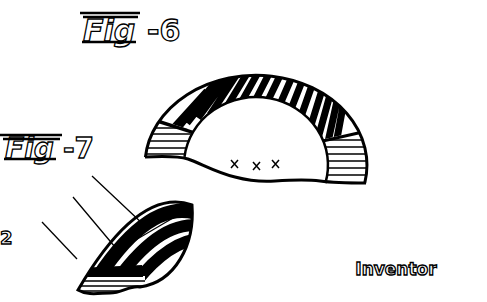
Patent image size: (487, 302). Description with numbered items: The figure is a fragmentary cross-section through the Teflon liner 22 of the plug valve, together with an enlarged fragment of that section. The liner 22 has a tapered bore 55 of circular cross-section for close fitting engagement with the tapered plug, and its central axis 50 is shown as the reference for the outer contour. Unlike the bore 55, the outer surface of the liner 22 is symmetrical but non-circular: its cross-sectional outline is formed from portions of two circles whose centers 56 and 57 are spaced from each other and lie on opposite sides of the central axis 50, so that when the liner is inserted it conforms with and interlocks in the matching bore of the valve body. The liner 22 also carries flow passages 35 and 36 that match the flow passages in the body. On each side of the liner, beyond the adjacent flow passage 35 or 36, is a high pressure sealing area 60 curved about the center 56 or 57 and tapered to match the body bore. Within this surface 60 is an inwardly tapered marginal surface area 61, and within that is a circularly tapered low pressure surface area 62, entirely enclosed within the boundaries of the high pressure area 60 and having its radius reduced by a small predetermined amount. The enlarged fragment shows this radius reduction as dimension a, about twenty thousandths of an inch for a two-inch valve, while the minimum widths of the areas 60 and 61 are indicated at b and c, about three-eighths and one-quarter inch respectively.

In FIG. 6, the liner 22 is at (260, 125).
In FIG. 7, the liner 22 is at (193, 238).
In FIG. 6, the flow passage 35 is at (168, 138).
In FIG. 6, the flow passage 36 is at (372, 151).
In FIG. 6, the central axis 50 is at (256, 170).
In FIG. 6, the tapered bore 55 is at (278, 101).
In FIG. 6, the center 56 is at (233, 162).
In FIG. 6, the center 57 is at (277, 160).
In FIG. 6, the high pressure sealing area 60 is at (168, 108).
In FIG. 7, the high pressure sealing area 60 is at (92, 264).
In FIG. 6, the inwardly tapered marginal surface area 61 is at (175, 97).
In FIG. 7, the inwardly tapered marginal surface area 61 is at (174, 254).
In FIG. 6, the low pressure surface area 62 is at (232, 78).
In FIG. 7, the low pressure surface area 62 is at (186, 205).
In FIG. 7, the radius reduction a is at (170, 229).
In FIG. 7, the minimum width of high pressure area b is at (111, 193).
In FIG. 7, the minimum width of marginal area c is at (88, 215).